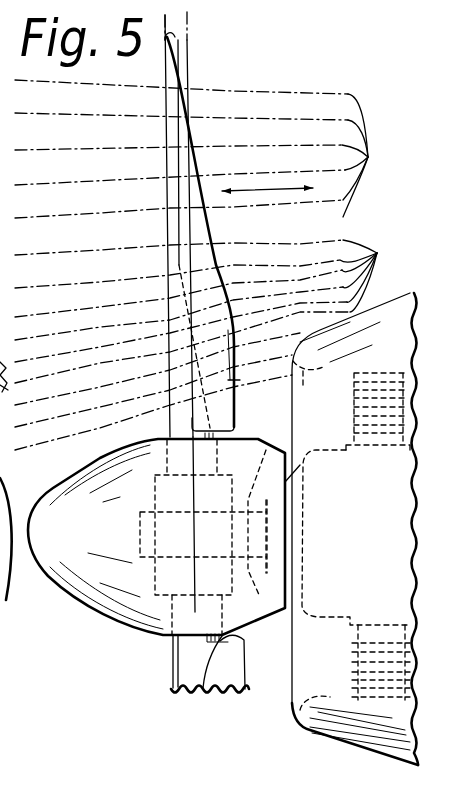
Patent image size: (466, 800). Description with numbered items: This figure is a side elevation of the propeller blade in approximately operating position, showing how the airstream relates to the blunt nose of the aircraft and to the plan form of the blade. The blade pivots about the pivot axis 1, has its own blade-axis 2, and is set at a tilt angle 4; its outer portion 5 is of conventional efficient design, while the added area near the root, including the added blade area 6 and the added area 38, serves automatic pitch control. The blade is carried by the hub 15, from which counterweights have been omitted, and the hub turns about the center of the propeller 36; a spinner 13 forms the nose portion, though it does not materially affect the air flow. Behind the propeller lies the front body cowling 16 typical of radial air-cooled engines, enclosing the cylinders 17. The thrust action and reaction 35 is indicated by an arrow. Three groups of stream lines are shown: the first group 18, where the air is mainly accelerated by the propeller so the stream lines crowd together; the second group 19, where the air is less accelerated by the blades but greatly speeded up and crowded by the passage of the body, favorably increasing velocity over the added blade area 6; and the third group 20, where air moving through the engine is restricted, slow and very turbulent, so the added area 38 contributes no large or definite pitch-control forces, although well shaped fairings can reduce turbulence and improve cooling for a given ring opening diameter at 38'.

The pivot axis of the blade 1 is at (188, 63).
The blade-axis 2 is at (166, 32).
The tilt angle 4 is at (177, 13).
The outer portion of the blade 5 is at (183, 134).
The added blade area 6 is at (1, 388).
The spinner 13 is at (107, 611).
The hub 15 is at (160, 468).
The front body cowling 16 is at (382, 307).
The cylinders 17 is at (345, 421).
The first group of stream lines 18 is at (209, 149).
The second group of stream lines 19 is at (211, 309).
The third group of stream lines 20 is at (250, 411).
The thrust action and reaction 35 is at (267, 185).
The center of the propeller 36 is at (192, 535).
The added area 38 is at (256, 358).
The ring opening diameter 38' is at (321, 381).